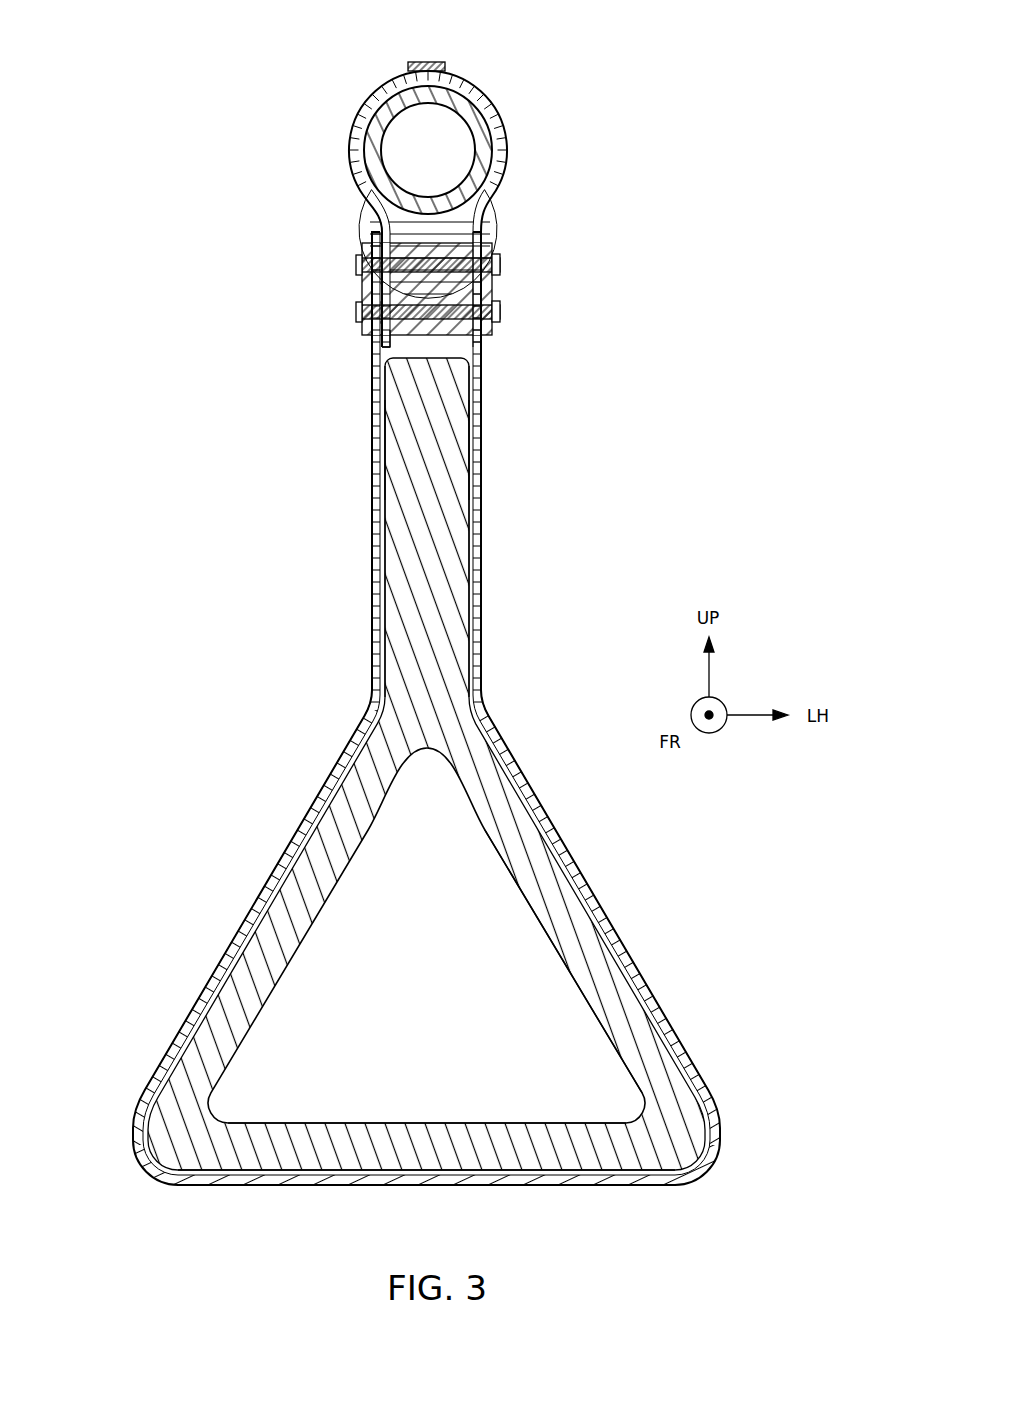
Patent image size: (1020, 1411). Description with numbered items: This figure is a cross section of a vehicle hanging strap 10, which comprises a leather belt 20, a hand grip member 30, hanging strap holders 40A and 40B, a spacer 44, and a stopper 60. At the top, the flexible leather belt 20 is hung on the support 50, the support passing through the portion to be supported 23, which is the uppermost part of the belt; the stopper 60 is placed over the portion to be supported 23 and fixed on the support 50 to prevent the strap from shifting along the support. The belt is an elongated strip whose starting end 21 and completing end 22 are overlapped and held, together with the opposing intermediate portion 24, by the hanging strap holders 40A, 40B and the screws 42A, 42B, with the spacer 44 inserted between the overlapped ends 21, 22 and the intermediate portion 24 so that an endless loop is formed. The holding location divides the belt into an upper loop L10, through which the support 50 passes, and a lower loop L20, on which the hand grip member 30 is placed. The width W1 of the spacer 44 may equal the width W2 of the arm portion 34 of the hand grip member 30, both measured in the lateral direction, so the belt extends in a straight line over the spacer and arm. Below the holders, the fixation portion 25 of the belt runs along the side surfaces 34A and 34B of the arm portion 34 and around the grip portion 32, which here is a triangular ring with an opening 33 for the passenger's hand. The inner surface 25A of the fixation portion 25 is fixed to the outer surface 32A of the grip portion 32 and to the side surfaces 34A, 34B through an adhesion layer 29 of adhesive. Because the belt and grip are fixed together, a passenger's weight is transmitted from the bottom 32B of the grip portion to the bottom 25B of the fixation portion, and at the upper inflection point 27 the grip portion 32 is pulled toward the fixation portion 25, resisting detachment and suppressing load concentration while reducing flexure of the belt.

The hanging strap 10 is at (160, 527).
The leather belt 20 is at (481, 470).
The starting end 21 is at (371, 230).
The completing end 22 is at (372, 350).
The portion to be supported 23 is at (470, 85).
The intermediate portion 24 is at (490, 246).
The fixation portion 25 is at (300, 835).
The inner surface 25A is at (625, 1000).
The bottom 25B is at (430, 1187).
The inflection point 27 is at (358, 695).
The adhesion layer 29 is at (374, 515).
The hand grip member 30 is at (385, 815).
The grip portion 32 is at (550, 880).
The outer surface 32A is at (612, 948).
The bottom 32B is at (380, 1145).
The opening 33 is at (284, 1073).
The arm portion 34 is at (445, 625).
The side surface 34A is at (381, 447).
The side surface 34B is at (480, 430).
The hanging strap holder 40A is at (362, 290).
The hanging strap holder 40B is at (497, 294).
The screw 42A is at (356, 262).
The screw 42B is at (357, 316).
The spacer 44 is at (484, 352).
The support 50 is at (486, 122).
The stopper 60 is at (428, 61).
The loop L10 is at (488, 220).
The loop L20 is at (488, 367).
The width of the spacer W1 is at (473, 281).
The width of the arm portion W2 is at (385, 393).